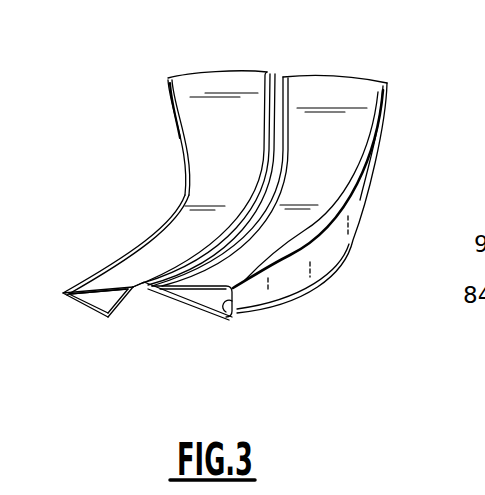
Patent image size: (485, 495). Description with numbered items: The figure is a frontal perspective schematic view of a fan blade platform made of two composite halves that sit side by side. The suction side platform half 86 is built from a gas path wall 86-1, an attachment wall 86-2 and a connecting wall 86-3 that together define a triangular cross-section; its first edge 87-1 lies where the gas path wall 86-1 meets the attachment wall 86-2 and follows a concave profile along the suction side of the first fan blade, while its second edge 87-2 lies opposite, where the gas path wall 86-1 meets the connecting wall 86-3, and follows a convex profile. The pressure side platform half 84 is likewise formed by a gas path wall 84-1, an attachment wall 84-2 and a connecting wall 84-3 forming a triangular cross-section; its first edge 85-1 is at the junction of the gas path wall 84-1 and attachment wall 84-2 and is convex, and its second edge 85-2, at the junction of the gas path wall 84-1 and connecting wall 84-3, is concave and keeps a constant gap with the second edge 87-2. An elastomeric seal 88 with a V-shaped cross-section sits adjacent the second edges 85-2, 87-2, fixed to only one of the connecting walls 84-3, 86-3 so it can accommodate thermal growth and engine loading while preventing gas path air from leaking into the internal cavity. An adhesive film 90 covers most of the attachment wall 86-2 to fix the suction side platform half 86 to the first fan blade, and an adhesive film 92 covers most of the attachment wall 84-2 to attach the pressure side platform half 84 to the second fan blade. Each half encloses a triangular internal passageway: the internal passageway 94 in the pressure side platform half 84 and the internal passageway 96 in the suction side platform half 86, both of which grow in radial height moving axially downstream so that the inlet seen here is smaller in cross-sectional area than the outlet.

The pressure side platform half 84 is at (365, 42).
The gas path wall 84-1 is at (362, 88).
The attachment wall 84-2 is at (228, 316).
The connecting wall 84-3 is at (203, 306).
The first edge 85-1 is at (380, 113).
The second edge 85-2 is at (289, 72).
The suction side platform half 86 is at (155, 65).
The gas path wall 86-1 is at (205, 120).
The attachment wall 86-2 is at (77, 308).
The connecting wall 86-3 is at (125, 315).
The first edge 87-1 is at (180, 167).
The second edge 87-2 is at (275, 77).
The seal 88 is at (147, 292).
The adhesive film 90 is at (168, 100).
The adhesive film 92 is at (328, 261).
The internal passageway 94 is at (214, 280).
The internal passageway 96 is at (97, 320).